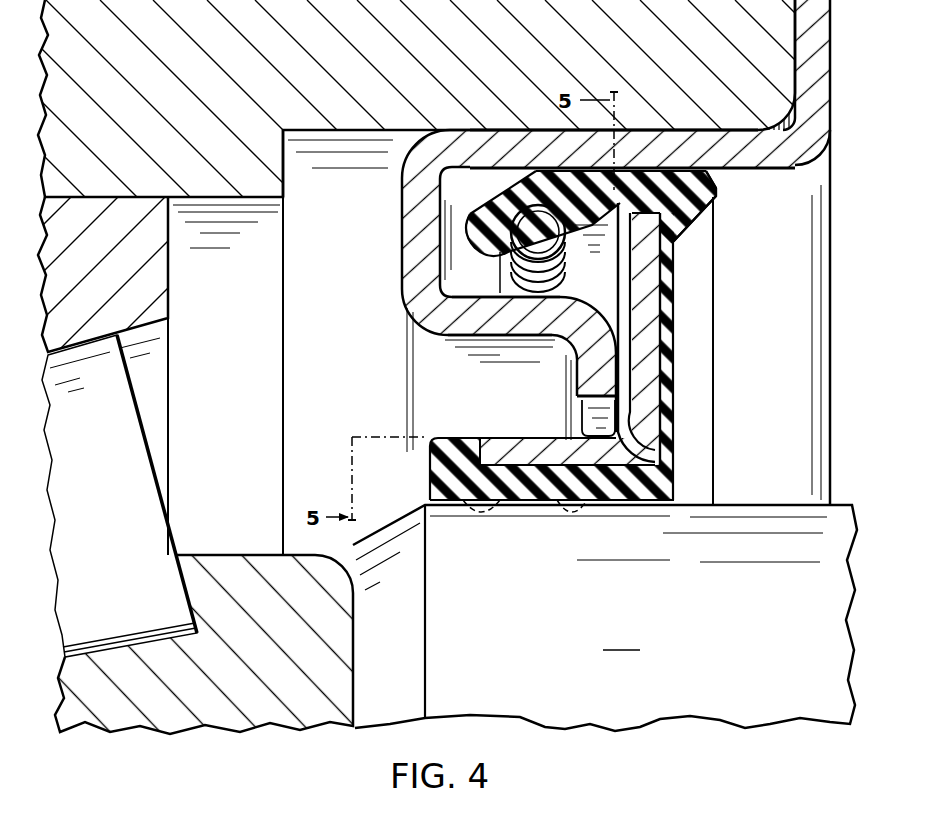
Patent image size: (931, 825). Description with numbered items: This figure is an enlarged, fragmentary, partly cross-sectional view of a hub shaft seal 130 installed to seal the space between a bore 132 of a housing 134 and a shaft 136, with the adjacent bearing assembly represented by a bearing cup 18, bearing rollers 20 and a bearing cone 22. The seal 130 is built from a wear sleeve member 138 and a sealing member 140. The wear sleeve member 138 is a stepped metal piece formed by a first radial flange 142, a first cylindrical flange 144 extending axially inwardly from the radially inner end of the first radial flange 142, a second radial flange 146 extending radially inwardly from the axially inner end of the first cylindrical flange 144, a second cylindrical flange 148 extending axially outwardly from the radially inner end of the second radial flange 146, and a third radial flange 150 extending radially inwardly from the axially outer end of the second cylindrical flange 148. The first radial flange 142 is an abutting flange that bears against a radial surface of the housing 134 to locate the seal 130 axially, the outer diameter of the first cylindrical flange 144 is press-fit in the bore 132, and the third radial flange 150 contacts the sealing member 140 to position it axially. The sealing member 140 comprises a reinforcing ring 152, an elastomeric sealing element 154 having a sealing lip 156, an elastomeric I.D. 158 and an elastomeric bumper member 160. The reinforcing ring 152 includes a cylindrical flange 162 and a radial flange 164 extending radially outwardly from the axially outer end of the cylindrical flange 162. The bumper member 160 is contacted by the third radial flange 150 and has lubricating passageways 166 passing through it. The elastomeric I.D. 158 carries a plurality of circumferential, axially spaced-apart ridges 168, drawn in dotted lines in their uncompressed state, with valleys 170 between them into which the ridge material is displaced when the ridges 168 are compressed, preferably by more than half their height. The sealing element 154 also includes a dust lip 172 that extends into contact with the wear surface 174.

The bearing cup 18 is at (160, 297).
The bearing rollers 20 is at (130, 447).
The bearing cone 22 is at (222, 563).
The seal 130 is at (728, 268).
The bore 132 is at (395, 133).
The housing 134 is at (778, 60).
The shaft 136 is at (605, 618).
The wear sleeve member 138 is at (824, 152).
The sealing member 140 is at (685, 306).
The first radial flange 142 is at (822, 92).
The first cylindrical flange 144 is at (748, 200).
The second radial flange 146 is at (405, 227).
The second cylindrical flange 148 is at (485, 327).
The third radial flange 150 is at (595, 375).
The reinforcing ring 152 is at (650, 363).
The elastomeric sealing element 154 is at (513, 187).
The sealing lip 156 is at (540, 157).
The elastomeric I.D. 158 is at (593, 497).
The elastomeric bumper member 160 is at (603, 303).
The cylindrical flange 162 is at (522, 443).
The radial flange 164 is at (665, 333).
The lubricating passageways 166 is at (640, 411).
The ridges 168 is at (575, 527).
The valleys 170 is at (533, 500).
The dust lip 172 is at (716, 200).
The wear surface 174 is at (637, 174).